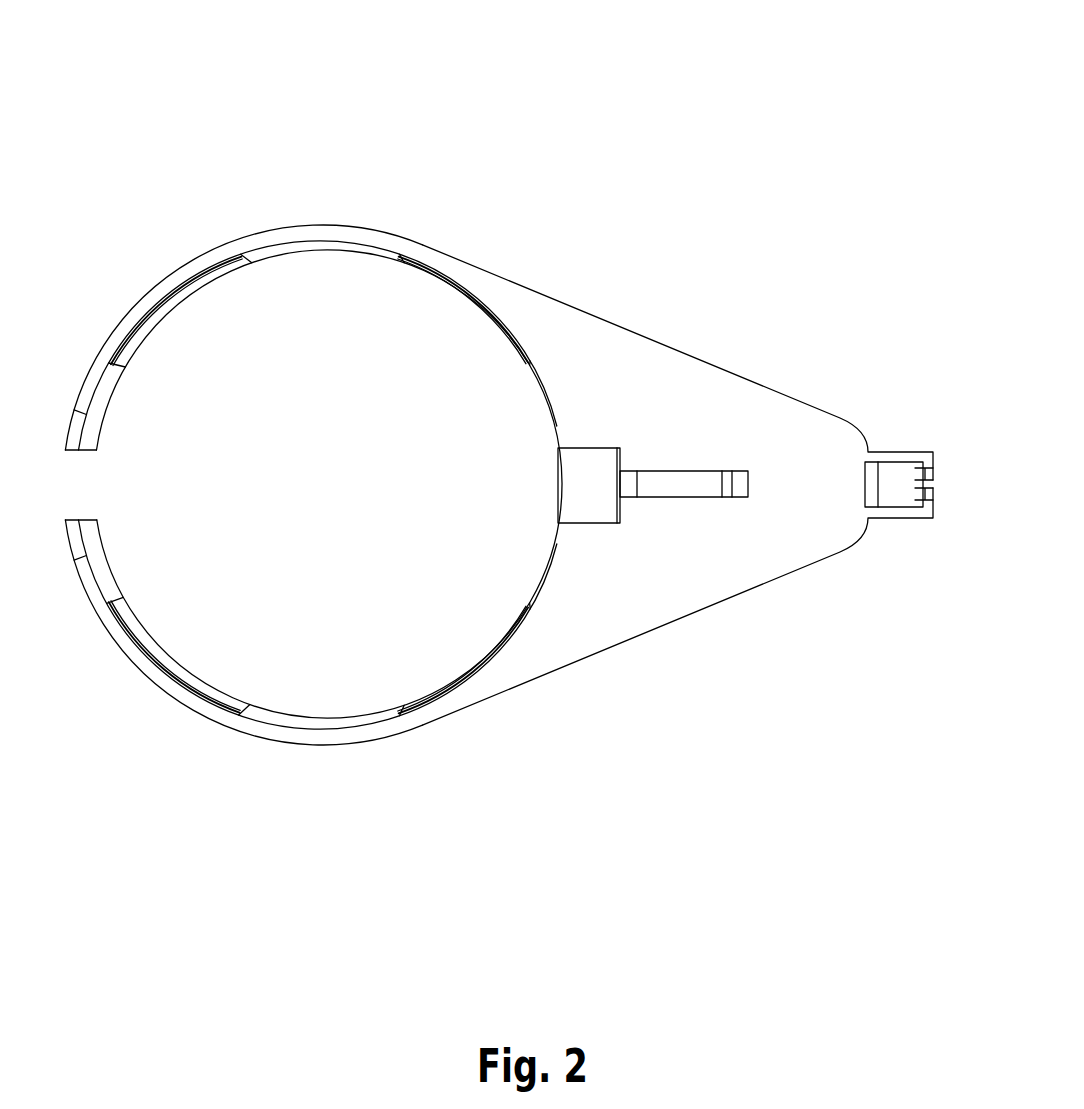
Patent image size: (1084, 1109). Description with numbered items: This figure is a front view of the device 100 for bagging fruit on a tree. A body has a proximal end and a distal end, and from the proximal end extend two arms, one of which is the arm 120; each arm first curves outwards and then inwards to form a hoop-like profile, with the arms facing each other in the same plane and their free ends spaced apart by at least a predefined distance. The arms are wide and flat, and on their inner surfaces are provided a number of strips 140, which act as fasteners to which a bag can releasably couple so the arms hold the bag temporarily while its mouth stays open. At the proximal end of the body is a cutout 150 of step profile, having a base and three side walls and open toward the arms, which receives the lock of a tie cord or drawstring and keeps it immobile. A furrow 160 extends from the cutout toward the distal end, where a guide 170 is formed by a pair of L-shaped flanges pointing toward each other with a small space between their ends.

The device 100 is at (633, 120).
The arm 120 is at (313, 223).
The strip 140 is at (172, 313).
The cutout 150 is at (587, 447).
The furrow 160 is at (662, 472).
The guide 170 is at (907, 453).